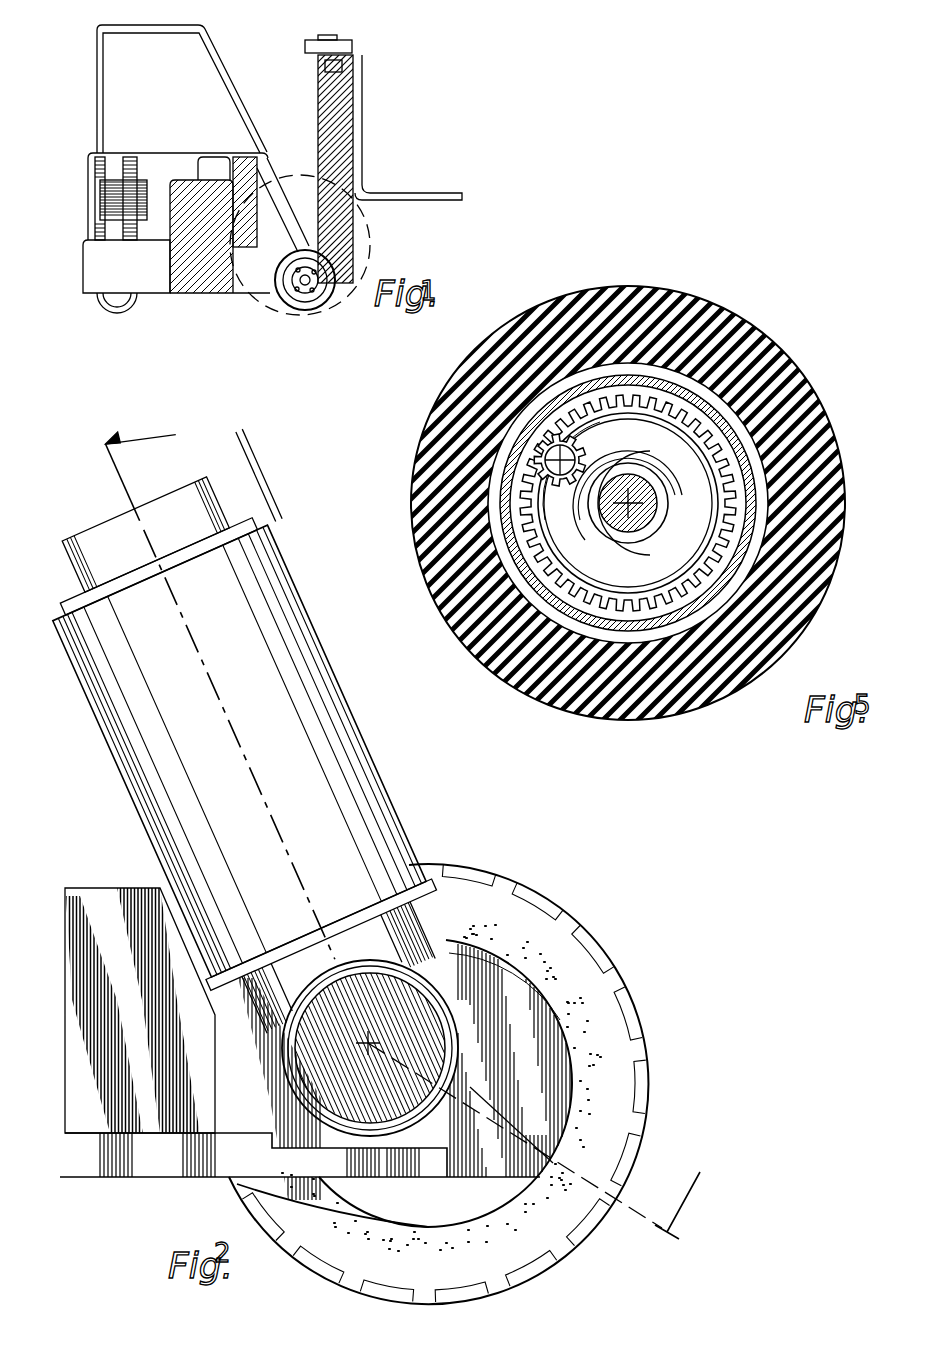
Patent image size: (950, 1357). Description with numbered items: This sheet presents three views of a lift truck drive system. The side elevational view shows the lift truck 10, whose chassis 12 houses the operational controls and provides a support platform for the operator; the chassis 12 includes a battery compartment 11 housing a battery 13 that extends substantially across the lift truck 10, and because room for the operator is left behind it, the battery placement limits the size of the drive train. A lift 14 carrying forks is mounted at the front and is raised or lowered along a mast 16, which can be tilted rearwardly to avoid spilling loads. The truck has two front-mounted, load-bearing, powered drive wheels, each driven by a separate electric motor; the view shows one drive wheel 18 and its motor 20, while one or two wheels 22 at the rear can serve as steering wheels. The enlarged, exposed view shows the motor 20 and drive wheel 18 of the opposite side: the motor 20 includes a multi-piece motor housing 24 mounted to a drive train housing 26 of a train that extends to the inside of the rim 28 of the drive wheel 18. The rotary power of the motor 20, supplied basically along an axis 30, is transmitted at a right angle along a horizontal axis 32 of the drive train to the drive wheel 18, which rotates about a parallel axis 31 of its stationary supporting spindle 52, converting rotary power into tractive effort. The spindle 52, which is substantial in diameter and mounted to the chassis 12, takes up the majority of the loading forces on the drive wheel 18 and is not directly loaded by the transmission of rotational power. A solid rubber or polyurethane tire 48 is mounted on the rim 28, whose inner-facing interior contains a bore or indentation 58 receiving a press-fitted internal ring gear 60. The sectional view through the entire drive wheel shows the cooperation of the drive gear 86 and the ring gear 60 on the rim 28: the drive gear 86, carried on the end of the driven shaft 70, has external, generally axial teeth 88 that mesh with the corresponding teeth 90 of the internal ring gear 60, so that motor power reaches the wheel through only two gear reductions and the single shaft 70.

In FIG. 1, the lift truck 10 is at (88, 60).
In FIG. 1, the battery compartment 11 is at (177, 290).
In FIG. 1, the chassis 12 is at (88, 254).
In FIG. 2, the chassis 12 is at (95, 888).
In FIG. 1, the battery 13 is at (164, 290).
In FIG. 1, the lift 14 is at (360, 92).
In FIG. 1, the mast 16 is at (345, 70).
In FIG. 1, the drive wheel 18 is at (290, 302).
In FIG. 5, the drive wheel 18 is at (722, 302).
In FIG. 2, the drive wheel 18 is at (549, 893).
In FIG. 1, the motor 20 is at (232, 295).
In FIG. 2, the motor 20 is at (402, 797).
In FIG. 1, the rear wheels 22 is at (104, 287).
In FIG. 2, the motor housing 24 is at (366, 792).
In FIG. 2, the drive train housing 26 is at (440, 940).
In FIG. 5, the rim 28 is at (712, 325).
In FIG. 2, the motor axis 30 is at (300, 848).
In FIG. 5, the drive wheel axis 31 is at (668, 418).
In FIG. 2, the drive wheel axis 31 is at (545, 952).
In FIG. 5, the horizontal drive train axis 32 is at (575, 395).
In FIG. 2, the horizontal drive train axis 32 is at (340, 925).
In FIG. 5, the tire 48 is at (736, 340).
In FIG. 2, the tire 48 is at (532, 902).
In FIG. 5, the spindle 52 is at (752, 372).
In FIG. 5, the indentation 58 is at (490, 567).
In FIG. 5, the internal ring gear 60 is at (545, 585).
In FIG. 5, the driven shaft 70 is at (548, 423).
In FIG. 5, the drive gear 86 is at (540, 448).
In FIG. 5, the drive gear teeth 88 is at (548, 470).
In FIG. 5, the ring gear teeth 90 is at (540, 553).